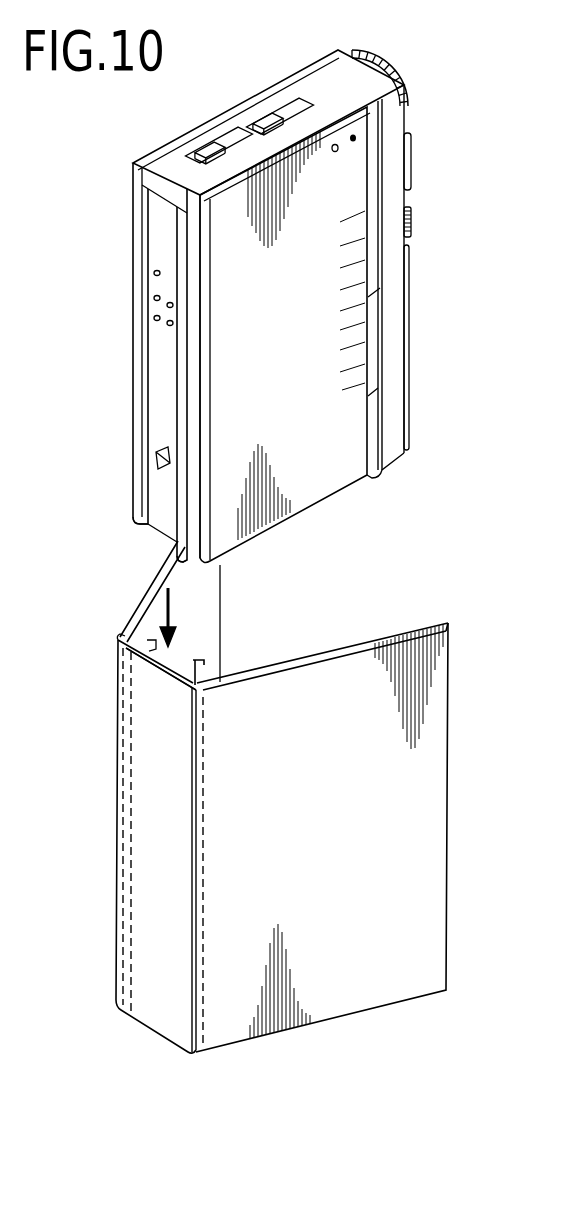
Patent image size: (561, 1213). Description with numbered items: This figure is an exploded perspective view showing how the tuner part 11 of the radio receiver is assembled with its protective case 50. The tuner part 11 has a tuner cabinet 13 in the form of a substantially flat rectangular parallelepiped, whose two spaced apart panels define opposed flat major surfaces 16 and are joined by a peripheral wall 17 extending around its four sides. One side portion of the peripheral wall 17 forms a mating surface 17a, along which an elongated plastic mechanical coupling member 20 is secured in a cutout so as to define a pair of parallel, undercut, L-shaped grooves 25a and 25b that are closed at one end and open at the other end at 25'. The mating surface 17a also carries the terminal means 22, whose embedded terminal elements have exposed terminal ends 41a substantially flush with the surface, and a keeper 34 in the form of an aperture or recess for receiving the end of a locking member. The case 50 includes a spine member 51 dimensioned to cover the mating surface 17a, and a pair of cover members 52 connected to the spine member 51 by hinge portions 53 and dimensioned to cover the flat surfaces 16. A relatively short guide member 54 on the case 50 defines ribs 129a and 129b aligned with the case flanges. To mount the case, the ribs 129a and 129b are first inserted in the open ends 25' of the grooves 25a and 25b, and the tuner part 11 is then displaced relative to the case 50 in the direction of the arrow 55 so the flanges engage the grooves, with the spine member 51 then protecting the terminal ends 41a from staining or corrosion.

The tuner part 11 is at (431, 183).
The tuner cabinet 13 is at (391, 352).
The major surfaces 16 is at (300, 487).
The peripheral wall 17 is at (312, 83).
The mating surface 17a is at (196, 330).
The mechanical coupling member 20 is at (164, 420).
The terminal means 22 is at (163, 334).
The groove 25a is at (183, 410).
The groove 25b is at (145, 393).
The open ends of grooves 25' is at (149, 556).
The keeper 34 is at (160, 471).
The exposed terminal ends 41a is at (153, 318).
The case 50 is at (97, 855).
The spine member 51 is at (153, 1005).
The cover members 52 is at (218, 628).
The hinge portions 53 is at (117, 927).
The guide member 54 is at (172, 656).
The arrow 55 is at (173, 610).
The rib 129a is at (150, 643).
The rib 129b is at (197, 663).